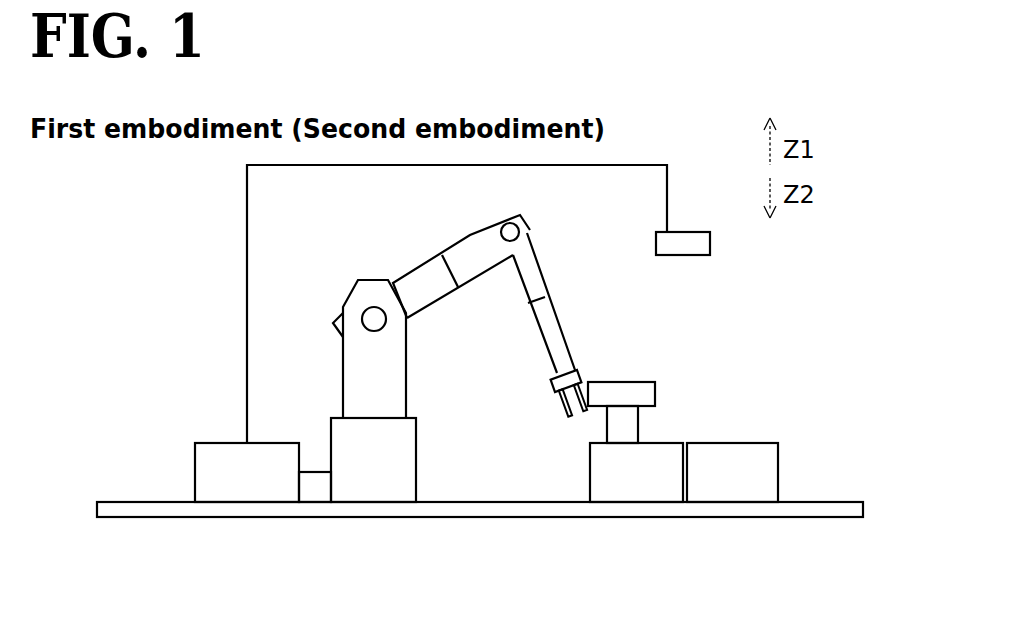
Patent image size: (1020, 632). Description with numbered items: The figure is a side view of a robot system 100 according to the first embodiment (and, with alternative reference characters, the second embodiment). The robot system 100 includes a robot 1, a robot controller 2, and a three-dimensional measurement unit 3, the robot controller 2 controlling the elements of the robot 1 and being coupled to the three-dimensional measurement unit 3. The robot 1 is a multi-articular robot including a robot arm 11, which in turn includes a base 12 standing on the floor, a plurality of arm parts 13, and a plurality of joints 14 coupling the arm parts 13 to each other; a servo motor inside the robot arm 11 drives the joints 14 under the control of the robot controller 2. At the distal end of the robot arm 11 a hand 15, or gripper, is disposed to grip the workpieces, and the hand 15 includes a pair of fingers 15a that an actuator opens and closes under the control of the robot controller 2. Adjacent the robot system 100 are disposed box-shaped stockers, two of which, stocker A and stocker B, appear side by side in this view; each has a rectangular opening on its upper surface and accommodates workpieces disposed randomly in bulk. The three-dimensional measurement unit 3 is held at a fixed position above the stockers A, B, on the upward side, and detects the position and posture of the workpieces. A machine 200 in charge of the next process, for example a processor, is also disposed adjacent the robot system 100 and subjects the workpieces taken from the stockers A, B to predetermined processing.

The robot system 100 is at (648, 142).
The robot 1 is at (448, 311).
The robot arm 11 is at (438, 277).
The base 12 is at (375, 490).
The arm parts 13 is at (462, 250).
The joints 14 is at (364, 311).
The hand (gripper) 15 is at (552, 385).
The fingers 15a is at (565, 408).
The robot controller 2 is at (195, 462).
The three-dimensional measurement unit 3 is at (704, 243).
The machine in charge of the next process 200 is at (648, 381).
The stocker A is at (590, 478).
The stocker B is at (778, 478).